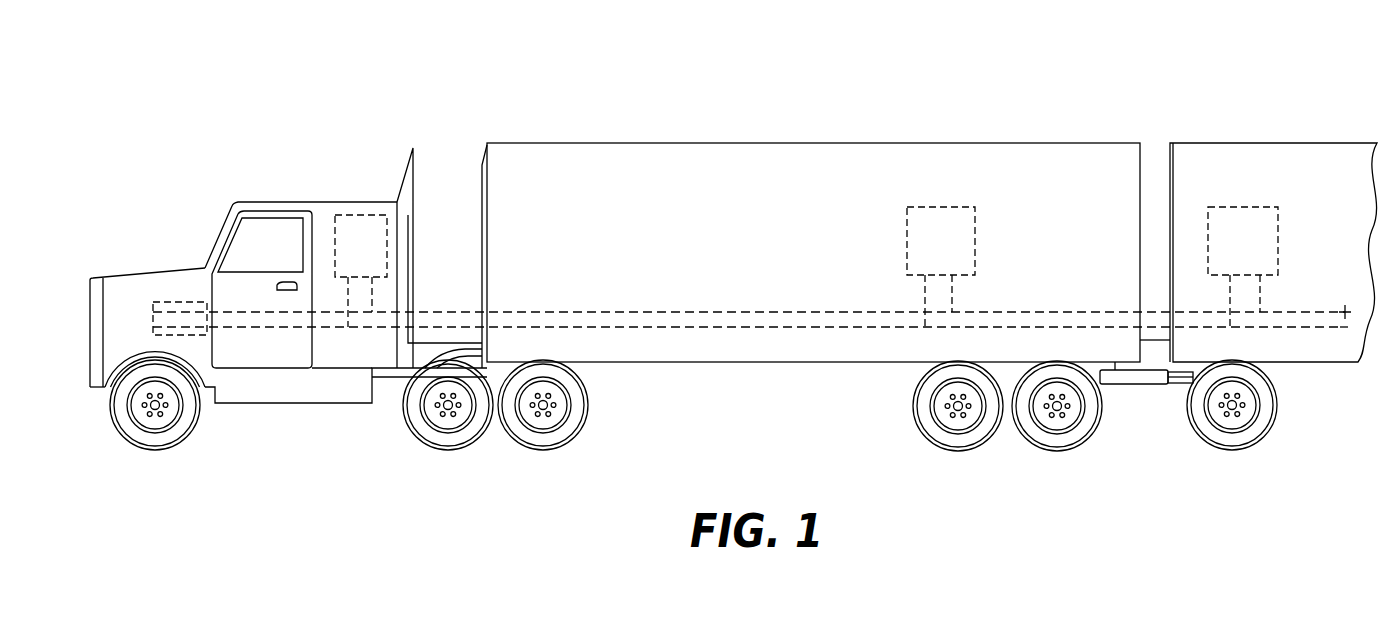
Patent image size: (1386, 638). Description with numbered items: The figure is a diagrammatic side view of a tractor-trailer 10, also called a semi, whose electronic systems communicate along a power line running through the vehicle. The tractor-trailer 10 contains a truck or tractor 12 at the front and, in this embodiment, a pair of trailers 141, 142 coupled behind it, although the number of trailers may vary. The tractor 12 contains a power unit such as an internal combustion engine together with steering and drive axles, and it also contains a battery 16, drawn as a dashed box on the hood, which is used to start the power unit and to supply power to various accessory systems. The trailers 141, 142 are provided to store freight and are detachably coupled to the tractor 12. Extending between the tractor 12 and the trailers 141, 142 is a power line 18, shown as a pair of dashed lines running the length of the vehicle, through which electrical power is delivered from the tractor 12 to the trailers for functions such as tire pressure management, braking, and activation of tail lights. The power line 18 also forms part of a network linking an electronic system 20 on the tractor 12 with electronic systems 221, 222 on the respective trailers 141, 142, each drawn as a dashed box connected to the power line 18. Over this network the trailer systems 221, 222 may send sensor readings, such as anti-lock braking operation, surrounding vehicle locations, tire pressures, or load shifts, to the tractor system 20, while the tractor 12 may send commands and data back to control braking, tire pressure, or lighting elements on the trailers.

The tractor-trailer 10 is at (193, 160).
The tractor 12 is at (128, 307).
The first trailer 141 is at (610, 167).
The second trailer 142 is at (1242, 158).
The battery 16 is at (170, 312).
The power line 18 is at (687, 310).
The electronic system 20 is at (357, 233).
The first trailer electronic system 221 is at (960, 235).
The second trailer electronic system 222 is at (1267, 222).